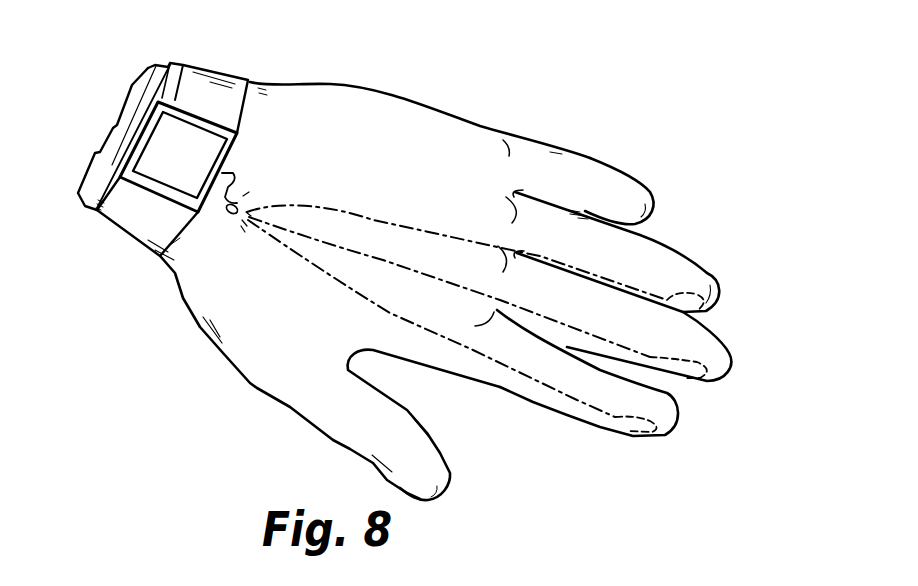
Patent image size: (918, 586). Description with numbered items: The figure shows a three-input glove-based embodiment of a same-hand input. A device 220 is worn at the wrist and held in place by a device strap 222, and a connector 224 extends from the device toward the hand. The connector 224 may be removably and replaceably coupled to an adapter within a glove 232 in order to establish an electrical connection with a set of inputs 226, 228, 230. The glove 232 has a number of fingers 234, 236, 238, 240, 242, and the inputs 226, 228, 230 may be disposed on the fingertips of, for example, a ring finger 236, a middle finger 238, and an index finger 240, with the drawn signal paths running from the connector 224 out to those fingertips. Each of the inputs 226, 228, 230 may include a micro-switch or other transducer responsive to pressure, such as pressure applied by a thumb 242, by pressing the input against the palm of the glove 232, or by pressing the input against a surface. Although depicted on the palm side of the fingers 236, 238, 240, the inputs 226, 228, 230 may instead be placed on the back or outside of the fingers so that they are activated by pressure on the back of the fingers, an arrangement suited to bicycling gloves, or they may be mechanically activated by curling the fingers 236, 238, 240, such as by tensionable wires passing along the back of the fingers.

The device 220 is at (170, 102).
The device strap 222 is at (222, 66).
The connector 224 is at (243, 182).
The input 226 is at (703, 305).
The input 228 is at (726, 370).
The input 230 is at (667, 438).
The glove 232 is at (433, 120).
The finger 234 is at (656, 204).
The ring finger 236 is at (708, 283).
The middle finger 238 is at (731, 352).
The index finger 240 is at (682, 412).
The thumb 242 is at (453, 462).